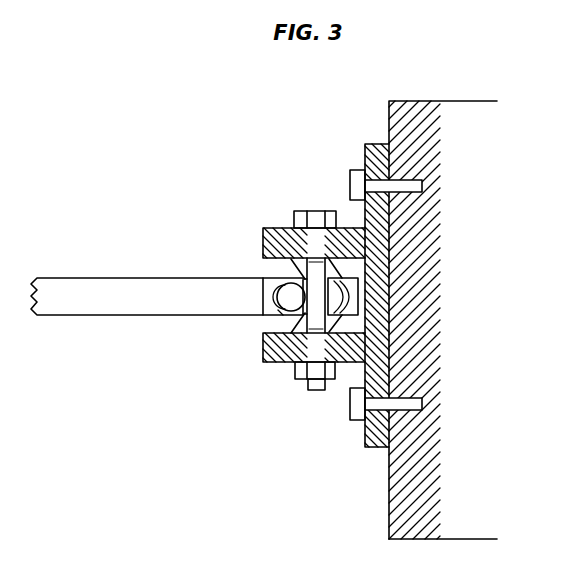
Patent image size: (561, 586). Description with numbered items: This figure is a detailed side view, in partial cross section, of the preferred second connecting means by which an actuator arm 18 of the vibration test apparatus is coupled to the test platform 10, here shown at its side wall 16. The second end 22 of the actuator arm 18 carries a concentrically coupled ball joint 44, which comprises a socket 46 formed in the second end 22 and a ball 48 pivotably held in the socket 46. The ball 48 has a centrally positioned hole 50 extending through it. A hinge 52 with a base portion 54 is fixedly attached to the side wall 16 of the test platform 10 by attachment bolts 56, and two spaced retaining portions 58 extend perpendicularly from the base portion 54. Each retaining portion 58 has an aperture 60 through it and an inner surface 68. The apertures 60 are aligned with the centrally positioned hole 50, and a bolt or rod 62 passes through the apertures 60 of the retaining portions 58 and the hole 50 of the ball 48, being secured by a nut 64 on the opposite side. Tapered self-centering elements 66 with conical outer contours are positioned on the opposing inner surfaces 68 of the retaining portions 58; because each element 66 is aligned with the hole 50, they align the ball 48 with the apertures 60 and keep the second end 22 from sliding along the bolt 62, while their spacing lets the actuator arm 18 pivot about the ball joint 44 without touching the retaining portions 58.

The test platform 10 is at (481, 541).
The side wall 16 is at (392, 468).
The actuator arm 18 is at (142, 276).
The second end 22 is at (279, 292).
The concentrically coupled ball joint 44 is at (306, 284).
The socket 46 is at (283, 314).
The ball 48 is at (362, 280).
The centrally positioned hole 50 is at (271, 310).
The hinge 52 is at (295, 272).
The base portion 54 is at (372, 381).
The attachment bolts 56 is at (422, 183).
The retaining portions 58 is at (270, 228).
The aperture 60 is at (330, 247).
The bolt or rod 62 is at (295, 208).
The nut 64 is at (312, 391).
The tapered self-centering elements 66 is at (327, 265).
The inner surface 68 is at (290, 262).